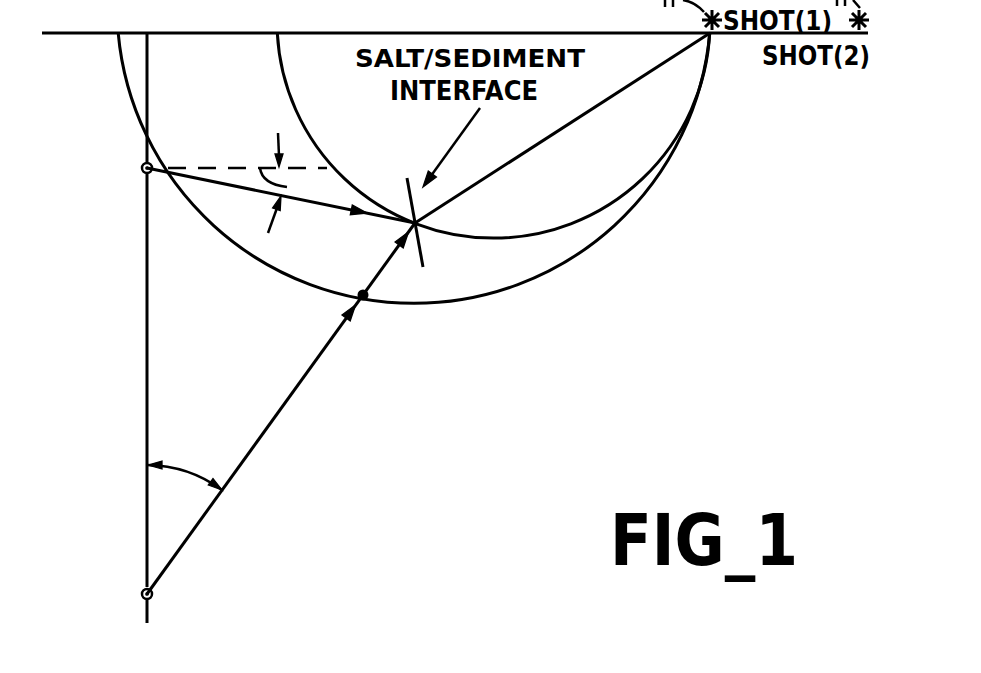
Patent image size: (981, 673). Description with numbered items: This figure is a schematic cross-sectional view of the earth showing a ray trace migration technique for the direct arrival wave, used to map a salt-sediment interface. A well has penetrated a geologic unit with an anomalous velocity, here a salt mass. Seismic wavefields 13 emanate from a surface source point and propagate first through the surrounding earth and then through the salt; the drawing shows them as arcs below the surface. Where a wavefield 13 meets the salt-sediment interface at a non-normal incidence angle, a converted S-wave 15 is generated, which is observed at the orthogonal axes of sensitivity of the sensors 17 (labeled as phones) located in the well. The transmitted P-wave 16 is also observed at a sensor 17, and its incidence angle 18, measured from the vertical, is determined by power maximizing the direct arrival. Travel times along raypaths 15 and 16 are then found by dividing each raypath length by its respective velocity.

The seismic wavefields 13 is at (122, 72).
The converted S-wave 15 is at (330, 207).
The transmitted P-wave 16 is at (282, 410).
The sensors 17 is at (142, 172).
The incidence angle φp 18 is at (257, 164).